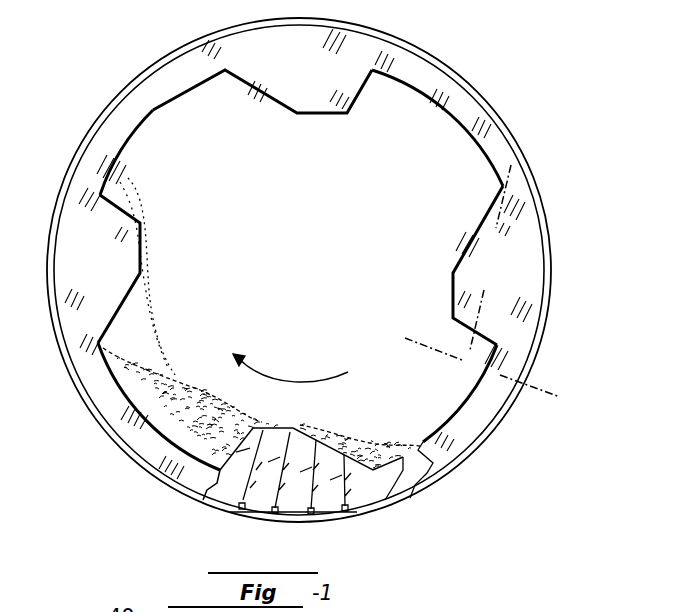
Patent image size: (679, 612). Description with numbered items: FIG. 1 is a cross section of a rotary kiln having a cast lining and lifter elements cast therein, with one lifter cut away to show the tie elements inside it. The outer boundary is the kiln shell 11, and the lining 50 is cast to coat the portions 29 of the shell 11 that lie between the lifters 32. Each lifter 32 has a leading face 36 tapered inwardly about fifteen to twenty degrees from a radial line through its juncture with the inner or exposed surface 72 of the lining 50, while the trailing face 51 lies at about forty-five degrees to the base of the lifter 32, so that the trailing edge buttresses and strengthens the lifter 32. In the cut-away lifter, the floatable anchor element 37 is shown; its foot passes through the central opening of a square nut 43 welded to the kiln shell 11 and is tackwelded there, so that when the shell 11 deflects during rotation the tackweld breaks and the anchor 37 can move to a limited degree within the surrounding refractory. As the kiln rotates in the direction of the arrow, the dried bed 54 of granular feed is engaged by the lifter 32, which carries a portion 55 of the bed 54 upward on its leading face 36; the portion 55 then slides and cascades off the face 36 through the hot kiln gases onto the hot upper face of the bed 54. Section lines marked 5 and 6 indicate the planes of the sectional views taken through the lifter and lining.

The kiln shell 11 is at (548, 234).
The portions of the shell 29 is at (100, 118).
The lifter element 32 is at (293, 80).
The leading face 36 is at (116, 196).
The floatable anchor element 37 is at (210, 490).
The square nut 43 is at (250, 514).
The lining 50 is at (147, 107).
The trailing face 51 is at (478, 233).
The bed 54 is at (233, 417).
The portion of bed 55 is at (142, 210).
The inner or exposed surface of lining 72 is at (458, 410).
The section line 5- 5 is at (510, 186).
The section line 6- 6 is at (426, 336).